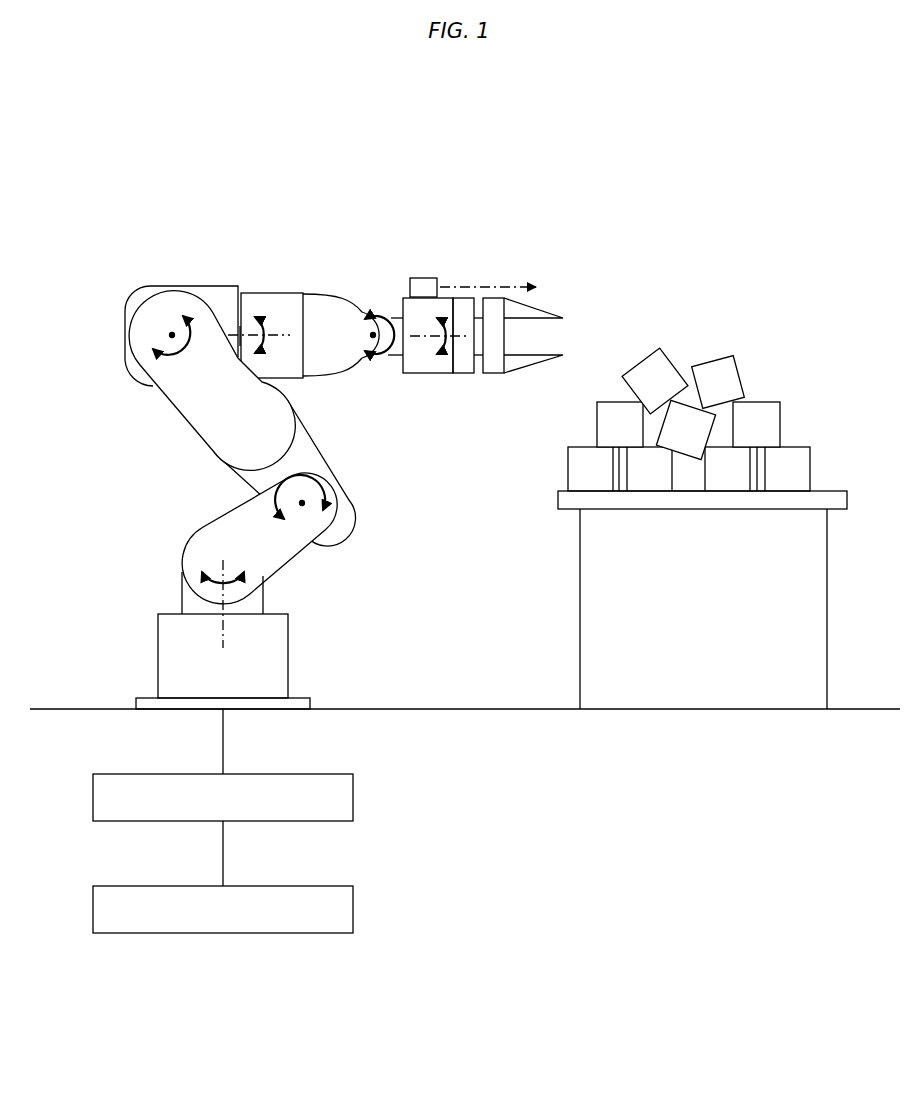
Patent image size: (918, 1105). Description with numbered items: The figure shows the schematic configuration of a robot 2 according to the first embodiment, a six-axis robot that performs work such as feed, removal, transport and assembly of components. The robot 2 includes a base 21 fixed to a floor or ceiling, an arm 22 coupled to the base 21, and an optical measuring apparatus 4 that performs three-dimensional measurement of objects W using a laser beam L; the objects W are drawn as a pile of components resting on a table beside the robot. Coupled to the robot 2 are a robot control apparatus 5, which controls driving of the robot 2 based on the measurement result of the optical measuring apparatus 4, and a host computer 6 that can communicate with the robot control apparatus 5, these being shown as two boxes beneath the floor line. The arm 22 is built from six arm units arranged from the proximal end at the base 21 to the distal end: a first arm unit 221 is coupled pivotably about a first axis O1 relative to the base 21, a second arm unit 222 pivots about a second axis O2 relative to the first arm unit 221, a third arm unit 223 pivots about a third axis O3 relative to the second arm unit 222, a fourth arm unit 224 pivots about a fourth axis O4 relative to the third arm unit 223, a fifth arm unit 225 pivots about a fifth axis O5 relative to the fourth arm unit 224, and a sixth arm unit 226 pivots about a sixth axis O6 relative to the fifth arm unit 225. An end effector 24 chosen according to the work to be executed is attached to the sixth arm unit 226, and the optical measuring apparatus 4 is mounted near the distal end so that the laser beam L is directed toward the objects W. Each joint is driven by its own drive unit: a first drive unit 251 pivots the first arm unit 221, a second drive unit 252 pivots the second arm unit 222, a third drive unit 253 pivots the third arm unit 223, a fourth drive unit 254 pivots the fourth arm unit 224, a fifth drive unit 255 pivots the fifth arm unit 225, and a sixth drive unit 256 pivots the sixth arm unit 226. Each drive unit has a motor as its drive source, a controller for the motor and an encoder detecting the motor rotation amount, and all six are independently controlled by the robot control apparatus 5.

The robot 2 is at (392, 136).
The optical measuring apparatus 4 is at (427, 278).
The robot control apparatus 5 is at (353, 795).
The host computer 6 is at (353, 908).
The base 21 is at (277, 660).
The arm 22 is at (289, 290).
The end effector 24 is at (524, 360).
The first arm unit 221 is at (193, 543).
The second arm unit 222 is at (220, 437).
The third arm unit 223 is at (142, 303).
The fourth arm unit 224 is at (257, 305).
The fifth arm unit 225 is at (430, 364).
The sixth arm unit 226 is at (462, 366).
The first drive unit 251 is at (190, 603).
The second drive unit 252 is at (310, 520).
The third drive unit 253 is at (167, 312).
The fourth drive unit 254 is at (227, 347).
The fifth drive unit 255 is at (372, 300).
The sixth drive unit 256 is at (440, 306).
The first axis O1 is at (223, 620).
The second axis O2 is at (305, 506).
The third axis O3 is at (172, 335).
The fourth axis O4 is at (235, 337).
The fifth axis O5 is at (370, 338).
The sixth axis O6 is at (413, 340).
The objects W is at (650, 365).
The laser beam L is at (500, 289).